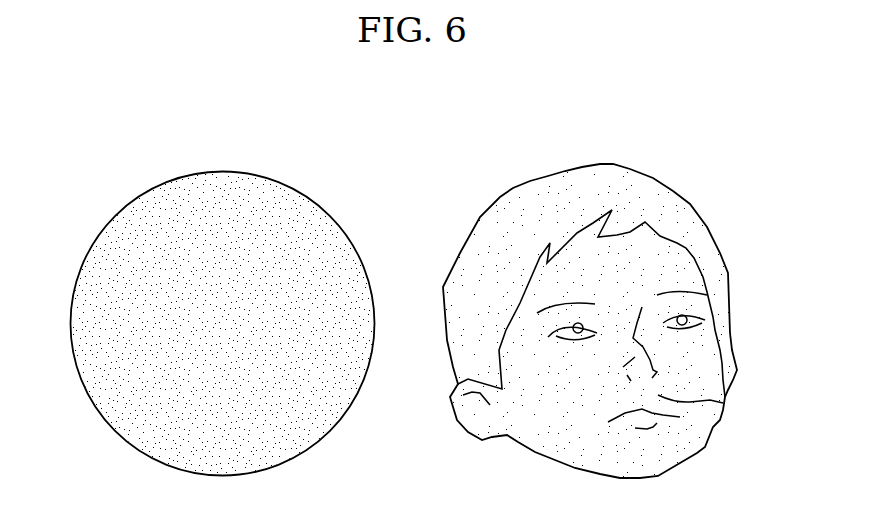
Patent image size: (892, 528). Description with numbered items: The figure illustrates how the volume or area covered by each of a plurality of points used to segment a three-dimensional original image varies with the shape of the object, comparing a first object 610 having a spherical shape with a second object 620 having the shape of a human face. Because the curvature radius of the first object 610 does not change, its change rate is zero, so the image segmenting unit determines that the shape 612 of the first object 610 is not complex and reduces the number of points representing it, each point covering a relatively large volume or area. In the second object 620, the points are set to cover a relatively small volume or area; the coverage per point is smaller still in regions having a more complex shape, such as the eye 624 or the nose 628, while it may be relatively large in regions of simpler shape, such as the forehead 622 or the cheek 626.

The first object 610 is at (118, 182).
The shape 612 is at (303, 228).
The second object 620 is at (483, 185).
The forehead 622 is at (672, 252).
The eye 624 is at (690, 302).
The cheek 626 is at (703, 365).
The nose 628 is at (723, 403).